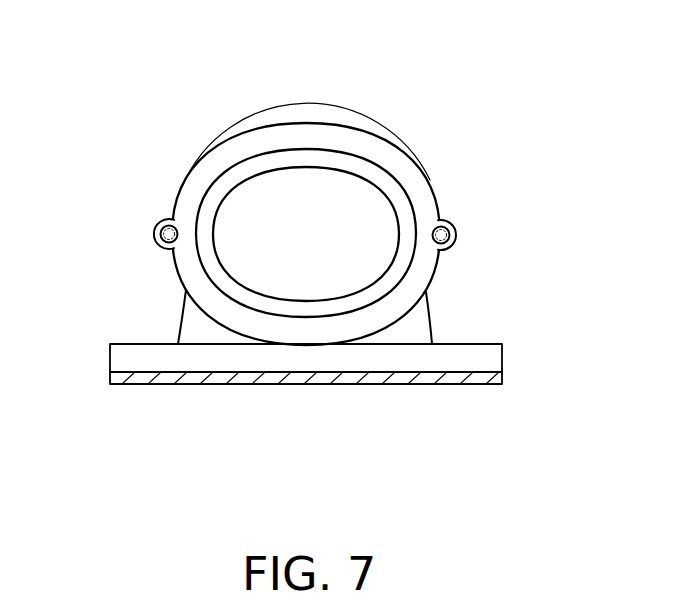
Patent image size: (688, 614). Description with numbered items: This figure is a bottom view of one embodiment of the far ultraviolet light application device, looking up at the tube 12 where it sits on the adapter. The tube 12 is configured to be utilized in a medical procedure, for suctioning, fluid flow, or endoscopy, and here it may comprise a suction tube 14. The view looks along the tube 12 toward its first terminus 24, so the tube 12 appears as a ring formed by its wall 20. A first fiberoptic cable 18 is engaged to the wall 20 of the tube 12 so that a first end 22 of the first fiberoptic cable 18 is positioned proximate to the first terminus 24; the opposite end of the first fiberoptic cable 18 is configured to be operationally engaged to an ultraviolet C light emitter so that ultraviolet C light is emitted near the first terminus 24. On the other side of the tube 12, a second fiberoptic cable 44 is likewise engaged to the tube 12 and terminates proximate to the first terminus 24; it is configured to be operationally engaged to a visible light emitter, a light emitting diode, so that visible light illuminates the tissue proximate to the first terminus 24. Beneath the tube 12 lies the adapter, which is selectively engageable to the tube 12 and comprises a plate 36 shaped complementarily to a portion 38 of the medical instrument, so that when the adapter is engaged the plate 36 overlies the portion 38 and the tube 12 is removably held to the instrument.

The tube 12 is at (380, 162).
The suction tube 14 is at (353, 143).
The first fiberoptic cable 18 is at (455, 222).
The wall 20 is at (185, 192).
The first end 22 is at (458, 243).
The first terminus 24 is at (410, 283).
The plate 36 is at (487, 358).
The portion 38 is at (373, 383).
The second fiberoptic cable 44 is at (155, 240).